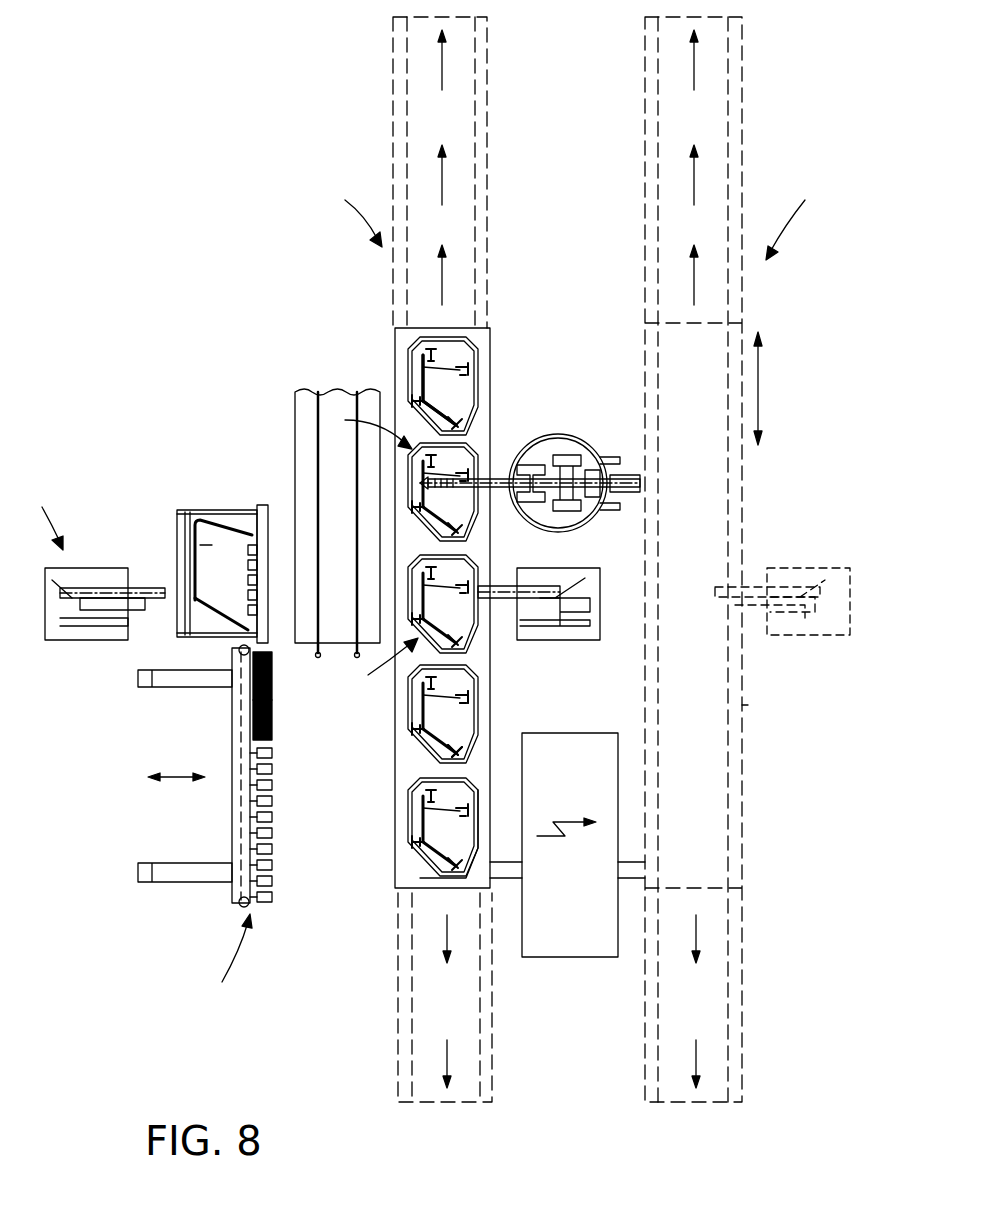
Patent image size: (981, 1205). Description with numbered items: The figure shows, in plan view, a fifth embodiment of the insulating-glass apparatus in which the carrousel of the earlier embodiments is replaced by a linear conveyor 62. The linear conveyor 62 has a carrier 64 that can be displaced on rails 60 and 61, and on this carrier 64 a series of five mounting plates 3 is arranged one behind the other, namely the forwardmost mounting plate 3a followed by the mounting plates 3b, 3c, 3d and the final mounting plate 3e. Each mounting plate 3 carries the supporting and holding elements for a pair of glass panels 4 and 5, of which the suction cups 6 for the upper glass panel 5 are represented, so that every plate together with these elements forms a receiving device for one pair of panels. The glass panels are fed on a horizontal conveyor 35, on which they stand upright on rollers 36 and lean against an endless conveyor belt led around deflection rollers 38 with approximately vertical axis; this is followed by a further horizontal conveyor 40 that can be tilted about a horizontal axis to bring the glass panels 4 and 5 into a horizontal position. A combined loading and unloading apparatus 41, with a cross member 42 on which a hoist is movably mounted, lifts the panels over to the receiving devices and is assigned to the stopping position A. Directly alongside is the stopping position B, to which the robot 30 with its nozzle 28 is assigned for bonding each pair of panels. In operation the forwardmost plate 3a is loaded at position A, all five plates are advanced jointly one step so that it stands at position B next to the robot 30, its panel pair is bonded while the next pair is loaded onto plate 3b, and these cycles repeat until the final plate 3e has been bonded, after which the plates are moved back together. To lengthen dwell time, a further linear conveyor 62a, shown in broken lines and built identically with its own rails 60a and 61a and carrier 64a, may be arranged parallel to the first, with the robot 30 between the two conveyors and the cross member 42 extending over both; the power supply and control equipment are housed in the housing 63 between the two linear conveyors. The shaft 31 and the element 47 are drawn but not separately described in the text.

The mounting plate 3 is at (420, 850).
The forwardmost mounting plate 3a is at (466, 340).
The second mounting plate 3b is at (462, 453).
The third mounting plate 3c is at (470, 628).
The fourth mounting plate 3d is at (425, 738).
The final mounting plate 3e is at (415, 815).
The glass panel 4 is at (418, 375).
The upper glass panel 5 is at (452, 386).
The suction cup 6 is at (452, 740).
The nozzle 28 is at (420, 477).
The robot 30 is at (568, 483).
The shaft 31 is at (498, 492).
The horizontal conveyor 35 is at (223, 961).
The rollers 36 is at (232, 782).
The deflection rollers 38 is at (238, 646).
The further horizontal conveyor 40 is at (202, 512).
The loading and unloading apparatus 41 is at (39, 515).
The cross member 42 is at (532, 590).
The tool magazine 47 is at (340, 392).
The rail 60 is at (475, 102).
The second conveyor track 60a is at (728, 97).
The rail 61 is at (407, 58).
The second conveyor belt 61a is at (658, 178).
The linear conveyor 62 is at (345, 210).
The further linear conveyor 62a is at (802, 217).
The control unit 63 is at (568, 948).
The carrier 64 is at (410, 770).
The second station frame 64a is at (748, 705).
The stopping position A is at (383, 666).
The stopping position B is at (368, 428).